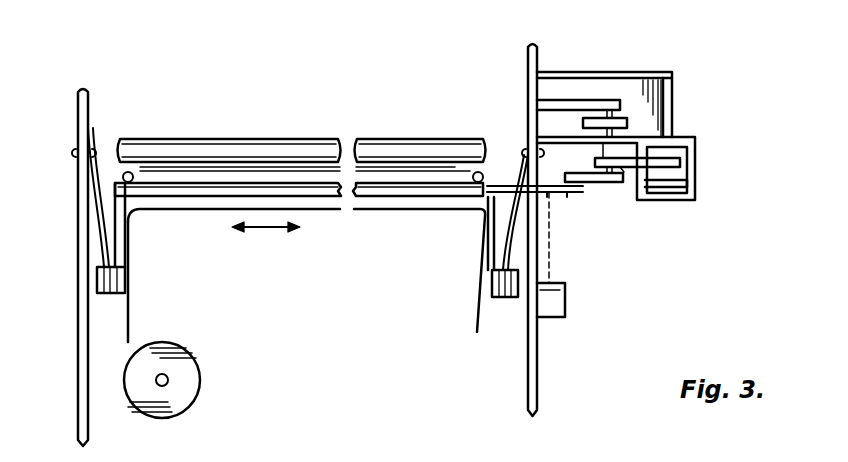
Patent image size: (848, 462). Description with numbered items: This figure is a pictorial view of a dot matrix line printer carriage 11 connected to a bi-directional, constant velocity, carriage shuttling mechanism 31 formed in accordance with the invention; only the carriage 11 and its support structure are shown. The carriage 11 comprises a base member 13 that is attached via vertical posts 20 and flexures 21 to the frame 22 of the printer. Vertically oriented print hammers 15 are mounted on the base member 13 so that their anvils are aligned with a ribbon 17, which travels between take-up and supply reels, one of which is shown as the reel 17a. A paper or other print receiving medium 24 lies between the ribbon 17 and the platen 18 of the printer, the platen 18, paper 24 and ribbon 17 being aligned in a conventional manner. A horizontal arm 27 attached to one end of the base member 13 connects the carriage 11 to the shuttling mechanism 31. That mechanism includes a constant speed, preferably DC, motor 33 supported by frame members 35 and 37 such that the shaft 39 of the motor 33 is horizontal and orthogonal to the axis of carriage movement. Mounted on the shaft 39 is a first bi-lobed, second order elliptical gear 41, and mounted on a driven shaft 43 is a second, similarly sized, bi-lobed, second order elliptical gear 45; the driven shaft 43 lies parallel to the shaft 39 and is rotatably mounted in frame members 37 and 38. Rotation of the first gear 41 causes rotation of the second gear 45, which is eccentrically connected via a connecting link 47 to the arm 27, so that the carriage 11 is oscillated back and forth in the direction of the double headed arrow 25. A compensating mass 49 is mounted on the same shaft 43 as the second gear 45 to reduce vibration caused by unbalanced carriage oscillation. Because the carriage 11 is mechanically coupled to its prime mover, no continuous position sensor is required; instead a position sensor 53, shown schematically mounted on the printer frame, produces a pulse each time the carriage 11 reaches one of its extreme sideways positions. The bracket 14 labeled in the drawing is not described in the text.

The carriage 11 is at (310, 211).
The base member 13 is at (210, 190).
The bracket 14 is at (122, 248).
The print hammers 15 is at (382, 193).
The ribbon 17 is at (129, 303).
The take-up reel 17a is at (198, 380).
The platen 18 is at (318, 140).
The vertical posts 20 is at (115, 293).
The flexures 21 is at (100, 244).
The frame 22 is at (82, 398).
The paper 24 is at (181, 168).
The double headed arrow 25 is at (266, 229).
The horizontal arm 27 is at (570, 193).
The carriage shuttling mechanism 31 is at (613, 188).
The motor 33 is at (674, 110).
The frame member 35 is at (566, 72).
The frame member 37 is at (690, 137).
The frame member 38 is at (592, 100).
The shaft 39 is at (686, 184).
The first bi-lobed, second order elliptical gear 41 is at (682, 164).
The driven shaft 43 is at (602, 144).
The second bi-lobed, second order elliptical gear 45 is at (622, 170).
The connecting link 47 is at (598, 183).
The compensating mass 49 is at (625, 112).
The position sensor 53 is at (566, 300).